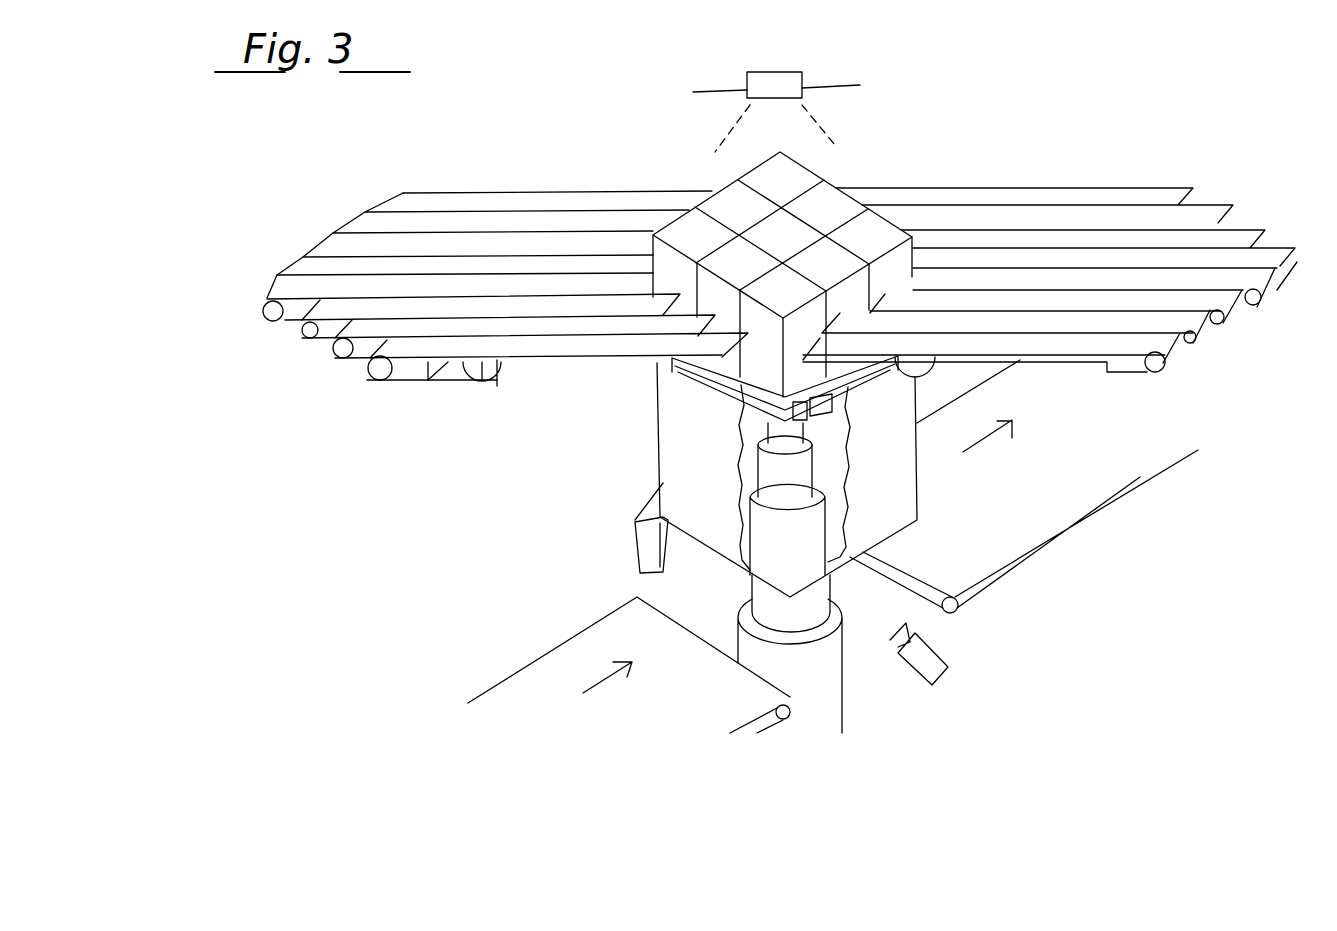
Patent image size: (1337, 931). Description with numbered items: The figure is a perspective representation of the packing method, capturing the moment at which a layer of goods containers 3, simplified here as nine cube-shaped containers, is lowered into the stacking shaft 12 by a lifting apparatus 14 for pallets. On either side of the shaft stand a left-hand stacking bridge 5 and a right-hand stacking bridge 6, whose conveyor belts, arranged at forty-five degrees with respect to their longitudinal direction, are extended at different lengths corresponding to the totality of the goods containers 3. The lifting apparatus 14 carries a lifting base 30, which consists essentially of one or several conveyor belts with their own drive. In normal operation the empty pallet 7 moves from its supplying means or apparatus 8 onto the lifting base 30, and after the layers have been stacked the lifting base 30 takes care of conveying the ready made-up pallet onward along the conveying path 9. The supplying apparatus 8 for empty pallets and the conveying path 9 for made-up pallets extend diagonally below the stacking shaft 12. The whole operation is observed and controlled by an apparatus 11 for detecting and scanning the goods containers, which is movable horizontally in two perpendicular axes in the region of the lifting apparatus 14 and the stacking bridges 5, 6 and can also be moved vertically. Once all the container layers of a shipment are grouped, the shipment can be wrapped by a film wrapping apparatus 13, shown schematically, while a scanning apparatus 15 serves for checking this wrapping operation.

The goods containers 3 is at (722, 205).
The left-hand stacking bridge 5 is at (512, 190).
The right-hand stacking bridge 6 is at (1142, 185).
The empty pallet 7 is at (785, 395).
The supplying means or apparatus 8 is at (710, 710).
The conveying path 9 is at (1000, 533).
The apparatus for detecting and scanning the goods containers 11 is at (795, 88).
The stacking shaft 12 is at (658, 418).
The film wrapping apparatus 13 is at (633, 545).
The lifting apparatus 14 is at (827, 643).
The scanning apparatus 15 is at (940, 673).
The lifting base 30 is at (797, 397).